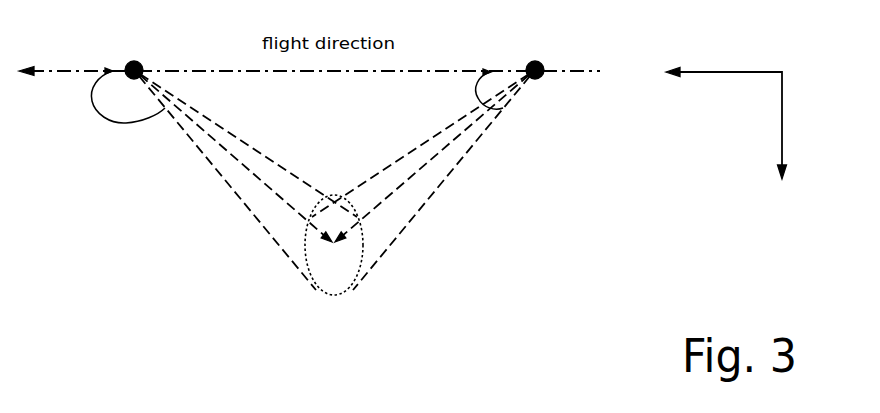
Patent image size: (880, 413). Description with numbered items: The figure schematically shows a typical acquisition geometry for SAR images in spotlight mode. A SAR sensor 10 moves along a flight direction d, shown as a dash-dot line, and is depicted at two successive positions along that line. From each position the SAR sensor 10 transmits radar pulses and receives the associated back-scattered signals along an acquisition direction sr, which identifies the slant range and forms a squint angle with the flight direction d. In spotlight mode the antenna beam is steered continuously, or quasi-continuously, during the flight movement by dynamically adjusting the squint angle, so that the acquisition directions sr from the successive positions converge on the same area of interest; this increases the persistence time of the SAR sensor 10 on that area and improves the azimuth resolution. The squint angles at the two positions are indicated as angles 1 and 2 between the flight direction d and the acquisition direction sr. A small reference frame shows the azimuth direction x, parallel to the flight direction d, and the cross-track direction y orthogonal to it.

The SAR sensor 10 is at (127, 63).
The acquisition direction sr is at (334, 182).
The viewing angle φ 1 is at (471, 89).
The viewing angle φ 2 is at (126, 108).
The flight direction d is at (309, 84).
The azimuth direction x is at (724, 83).
The cross-track direction y is at (770, 132).